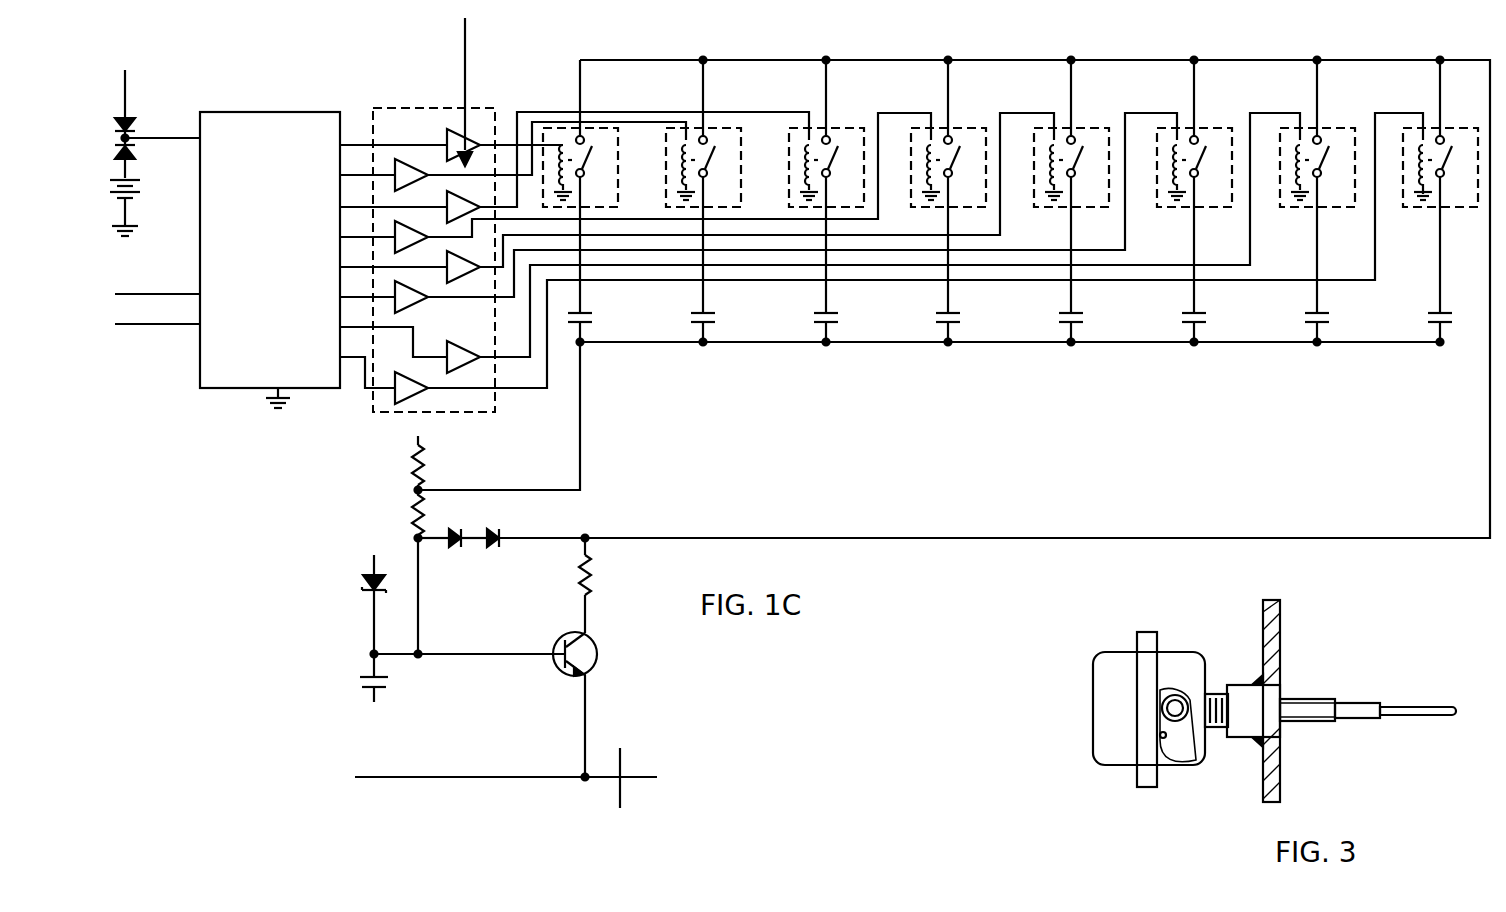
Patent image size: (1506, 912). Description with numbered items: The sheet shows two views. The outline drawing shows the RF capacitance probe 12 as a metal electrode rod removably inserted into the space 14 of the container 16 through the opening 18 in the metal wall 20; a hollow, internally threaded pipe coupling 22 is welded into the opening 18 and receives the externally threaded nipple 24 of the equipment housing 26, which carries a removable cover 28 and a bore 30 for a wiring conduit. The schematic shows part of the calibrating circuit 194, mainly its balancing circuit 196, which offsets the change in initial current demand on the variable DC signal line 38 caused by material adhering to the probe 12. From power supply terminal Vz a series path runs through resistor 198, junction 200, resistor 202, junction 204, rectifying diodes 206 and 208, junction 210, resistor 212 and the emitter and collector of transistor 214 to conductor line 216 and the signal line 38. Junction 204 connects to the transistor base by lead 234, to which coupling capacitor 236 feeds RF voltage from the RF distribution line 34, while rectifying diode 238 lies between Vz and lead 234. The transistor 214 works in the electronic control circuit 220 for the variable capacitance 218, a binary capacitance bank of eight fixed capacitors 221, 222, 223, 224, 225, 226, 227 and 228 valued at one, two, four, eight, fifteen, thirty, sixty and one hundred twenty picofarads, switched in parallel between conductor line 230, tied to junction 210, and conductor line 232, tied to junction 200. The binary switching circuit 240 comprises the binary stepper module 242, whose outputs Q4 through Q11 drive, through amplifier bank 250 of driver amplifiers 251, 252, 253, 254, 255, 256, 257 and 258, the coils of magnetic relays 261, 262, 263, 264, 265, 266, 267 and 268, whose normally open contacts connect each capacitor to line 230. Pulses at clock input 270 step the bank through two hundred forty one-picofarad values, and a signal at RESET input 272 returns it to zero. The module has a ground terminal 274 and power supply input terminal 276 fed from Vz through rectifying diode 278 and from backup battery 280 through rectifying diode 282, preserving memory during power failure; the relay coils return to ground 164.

In FIG. 3, the RF capacitance probe 12 is at (1430, 705).
In FIG. 3, the space 14 is at (1262, 628).
In FIG. 3, the container 16 is at (1260, 798).
In FIG. 3, the opening 18 is at (1278, 728).
In FIG. 3, the wall 20 is at (1268, 780).
In FIG. 3, the pipe coupling 22 is at (1255, 715).
In FIG. 3, the threaded nipple 24 is at (1212, 692).
In FIG. 3, the equipment housing 26 is at (1168, 652).
In FIG. 3, the removable cover 28 is at (1100, 652).
In FIG. 3, the bore 30 is at (1166, 708).
In FIG. 1C, the RF distribution line 34 is at (370, 687).
In FIG. 1C, the variable DC signal line 38 is at (462, 777).
In FIG. 1C, the ground 164 is at (293, 405).
In FIG. 1C, the calibrating circuit 194 is at (300, 792).
In FIG. 1C, the balancing circuit 196 is at (905, 410).
In FIG. 1C, the resistor 198 is at (430, 466).
In FIG. 1C, the junction 200 is at (414, 490).
In FIG. 1C, the resistor 202 is at (414, 530).
In FIG. 1C, the junction 204 is at (424, 546).
In FIG. 1C, the rectifying diode 206 is at (452, 530).
In FIG. 1C, the rectifying diode 208 is at (500, 533).
In FIG. 1C, the junction 210 is at (588, 534).
In FIG. 1C, the resistor 212 is at (580, 585).
In FIG. 1C, the transistor 214 is at (601, 662).
In FIG. 1C, the conductor line 216 is at (590, 722).
In FIG. 1C, the variable capacitance 218 is at (1172, 373).
In FIG. 1C, the electronic control circuit 220 is at (606, 618).
In FIG. 1C, the fixed capacitor 221 is at (590, 316).
In FIG. 1C, the fixed capacitor 222 is at (690, 318).
In FIG. 1C, the fixed capacitor 223 is at (816, 316).
In FIG. 1C, the fixed capacitor 224 is at (938, 316).
In FIG. 1C, the fixed capacitor 225 is at (1061, 316).
In FIG. 1C, the fixed capacitor 226 is at (1184, 316).
In FIG. 1C, the fixed capacitor 227 is at (1307, 316).
In FIG. 1C, the fixed capacitor 228 is at (1432, 316).
In FIG. 1C, the conductor line 230 is at (722, 58).
In FIG. 1C, the conductor line 232 is at (738, 345).
In FIG. 1C, the lead 234 is at (512, 654).
In FIG. 1C, the coupling capacitor 236 is at (388, 684).
In FIG. 1C, the rectifying diode 238 is at (366, 580).
In FIG. 1C, the binary switching circuit 240 is at (230, 106).
In FIG. 1C, the binary stepper module 242 is at (228, 390).
In FIG. 1C, the driver amplifier bank 250 is at (402, 414).
In FIG. 1C, the driver amplifier 251 is at (462, 100).
In FIG. 1C, the driver amplifier 252 is at (411, 150).
In FIG. 1C, the driver amplifier 253 is at (510, 135).
In FIG. 1C, the driver amplifier 254 is at (444, 283).
In FIG. 1C, the driver amplifier 255 is at (488, 283).
In FIG. 1C, the driver amplifier 256 is at (410, 305).
In FIG. 1C, the driver amplifier 257 is at (468, 372).
In FIG. 1C, the driver amplifier 258 is at (392, 414).
In FIG. 1C, the magnetic relay 261 is at (618, 128).
In FIG. 1C, the magnetic relay 262 is at (741, 128).
In FIG. 1C, the magnetic relay 263 is at (864, 128).
In FIG. 1C, the magnetic relay 264 is at (986, 128).
In FIG. 1C, the magnetic relay 265 is at (1109, 128).
In FIG. 1C, the magnetic relay 266 is at (1232, 128).
In FIG. 1C, the magnetic relay 267 is at (1355, 128).
In FIG. 1C, the magnetic relay 268 is at (1465, 128).
In FIG. 1C, the clock input 270 is at (124, 326).
In FIG. 1C, the RESET input 272 is at (158, 294).
In FIG. 1C, the ground terminal 274 is at (270, 400).
In FIG. 1C, the power supply input terminal 276 is at (150, 136).
In FIG. 1C, the rectifying diode 278 is at (127, 117).
In FIG. 1C, the battery 280 is at (131, 218).
In FIG. 1C, the rectifying diode 282 is at (132, 152).